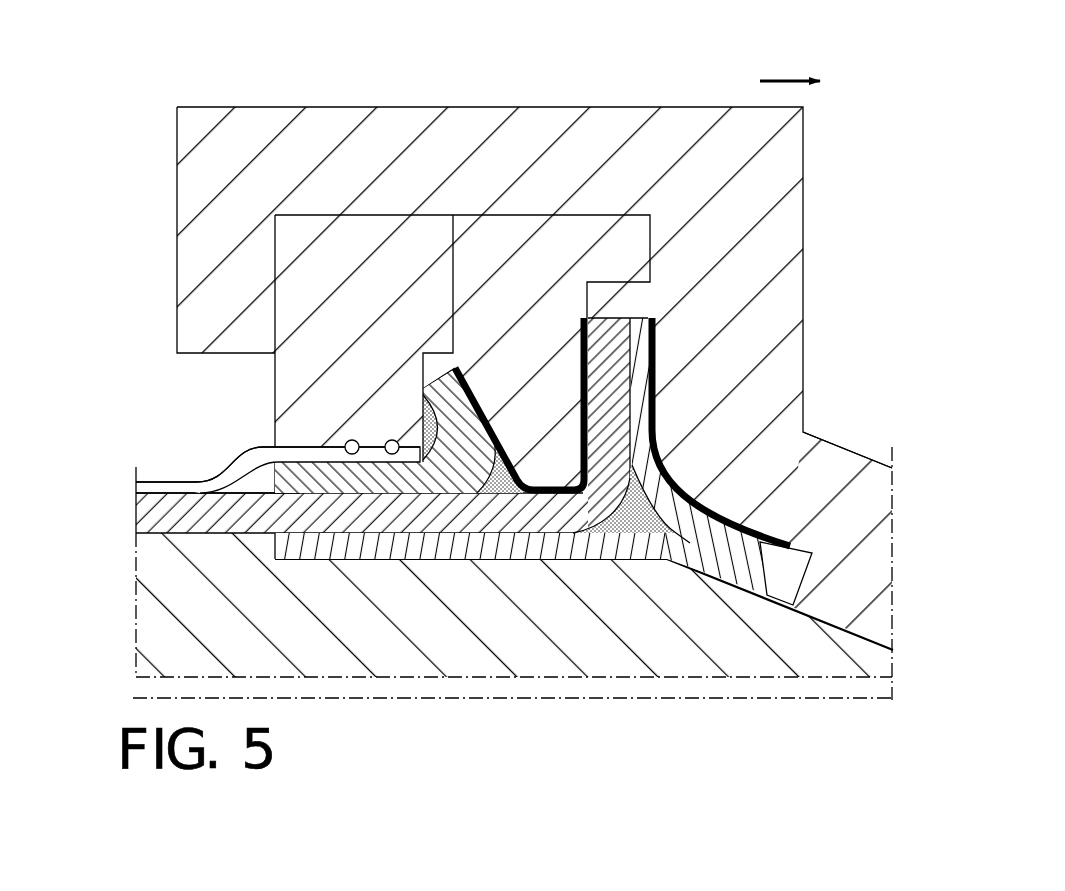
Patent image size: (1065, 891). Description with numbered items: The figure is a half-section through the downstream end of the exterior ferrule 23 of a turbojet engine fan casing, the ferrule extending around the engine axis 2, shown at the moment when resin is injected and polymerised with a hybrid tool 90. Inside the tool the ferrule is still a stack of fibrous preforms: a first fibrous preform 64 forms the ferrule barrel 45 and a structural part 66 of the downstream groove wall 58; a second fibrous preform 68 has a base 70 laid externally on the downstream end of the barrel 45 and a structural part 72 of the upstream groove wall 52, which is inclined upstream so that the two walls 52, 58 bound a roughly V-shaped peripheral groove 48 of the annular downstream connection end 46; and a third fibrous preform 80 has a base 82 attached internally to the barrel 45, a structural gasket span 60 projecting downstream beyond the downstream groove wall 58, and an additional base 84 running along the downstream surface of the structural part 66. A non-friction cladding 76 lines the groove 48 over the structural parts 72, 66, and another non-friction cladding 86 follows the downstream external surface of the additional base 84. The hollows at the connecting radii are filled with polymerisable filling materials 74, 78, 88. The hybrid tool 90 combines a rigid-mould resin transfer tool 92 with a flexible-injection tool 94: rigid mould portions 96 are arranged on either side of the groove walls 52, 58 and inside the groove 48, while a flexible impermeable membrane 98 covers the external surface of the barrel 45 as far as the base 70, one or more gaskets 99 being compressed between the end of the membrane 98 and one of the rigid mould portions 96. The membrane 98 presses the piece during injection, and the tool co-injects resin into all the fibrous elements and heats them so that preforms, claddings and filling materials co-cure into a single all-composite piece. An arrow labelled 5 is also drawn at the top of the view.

The viewing direction arrow 5 is at (790, 81).
The hybrid tool 90 is at (822, 105).
The rigid mould portions 96 is at (330, 240).
The upstream groove wall 52 is at (437, 372).
The non-friction cladding 76 is at (473, 363).
The peripheral groove 48 is at (490, 403).
The structural part of the downstream groove wall 66 is at (622, 312).
The downstream groove wall 58 is at (653, 263).
The structural part of the upstream groove wall 72 is at (430, 435).
The filling material 74 is at (442, 400).
The exterior ferrule 23 is at (673, 327).
The rigid-mould resin transfer tool 92 is at (770, 328).
The non-friction cladding 86 is at (653, 350).
The additional base 84 is at (653, 397).
The annular downstream connection end 46 is at (673, 458).
The second fibrous preform 68 is at (275, 457).
The base 70 is at (270, 447).
The gaskets 99 is at (318, 470).
The flexible-injection tool 94 is at (222, 460).
The flexible impermeable membrane 98 is at (173, 487).
The first fibrous preform 64 is at (130, 513).
The ferrule barrel 45 is at (240, 498).
The axis 2 is at (142, 697).
The base 82 is at (330, 557).
The filling material 78 is at (502, 482).
The filling material 88 is at (637, 527).
The structural gasket span 60 is at (728, 593).
The third fibrous preform 80 is at (790, 580).